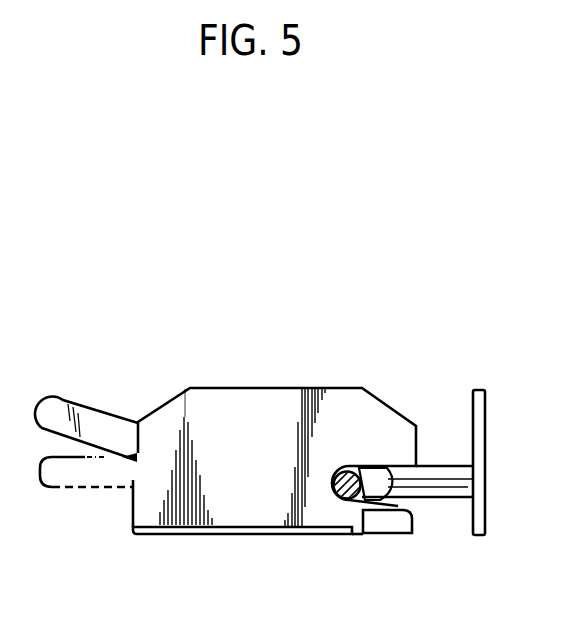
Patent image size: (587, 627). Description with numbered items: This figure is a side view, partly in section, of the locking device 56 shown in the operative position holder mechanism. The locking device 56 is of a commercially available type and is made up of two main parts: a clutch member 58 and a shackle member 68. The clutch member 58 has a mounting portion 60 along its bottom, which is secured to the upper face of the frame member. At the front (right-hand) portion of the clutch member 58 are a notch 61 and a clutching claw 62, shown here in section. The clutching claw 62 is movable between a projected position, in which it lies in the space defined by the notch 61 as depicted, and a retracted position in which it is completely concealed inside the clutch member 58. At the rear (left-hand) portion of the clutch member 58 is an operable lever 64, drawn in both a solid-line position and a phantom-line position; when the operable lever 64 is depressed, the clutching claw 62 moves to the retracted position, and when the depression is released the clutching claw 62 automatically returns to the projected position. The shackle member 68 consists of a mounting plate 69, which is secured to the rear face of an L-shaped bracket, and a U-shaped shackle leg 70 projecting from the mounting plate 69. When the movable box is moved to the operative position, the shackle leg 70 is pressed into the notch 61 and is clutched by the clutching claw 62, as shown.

The locking device 56 is at (396, 326).
The clutch member 58 is at (278, 388).
The mounting portion 60 is at (236, 527).
The notch 61 is at (394, 500).
The clutching claw 62 is at (373, 492).
The operable lever 64 is at (78, 452).
The shackle member 68 is at (453, 392).
The mounting plate 69 is at (484, 412).
The shackle leg 70 is at (444, 500).